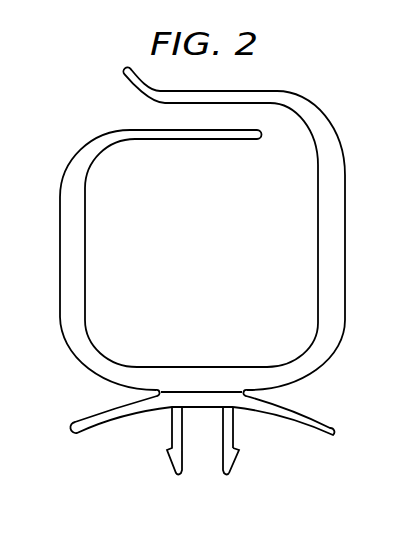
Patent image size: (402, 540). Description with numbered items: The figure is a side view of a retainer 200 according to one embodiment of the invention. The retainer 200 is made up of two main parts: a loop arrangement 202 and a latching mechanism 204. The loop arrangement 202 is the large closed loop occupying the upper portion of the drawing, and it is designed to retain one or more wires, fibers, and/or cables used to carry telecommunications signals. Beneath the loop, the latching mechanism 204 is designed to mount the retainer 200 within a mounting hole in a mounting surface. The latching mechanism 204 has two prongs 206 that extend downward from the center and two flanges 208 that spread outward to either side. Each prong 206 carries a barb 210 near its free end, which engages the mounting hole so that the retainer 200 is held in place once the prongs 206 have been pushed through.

The retainer 200 is at (331, 78).
The loop arrangement 202 is at (58, 155).
The latching mechanism 204 is at (151, 439).
The prong 206 is at (211, 450).
The flange 208 is at (337, 438).
The barb 210 is at (237, 454).